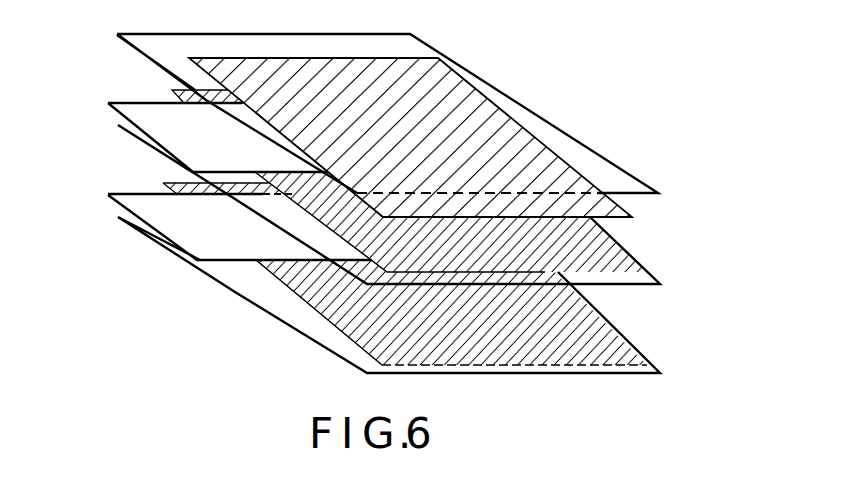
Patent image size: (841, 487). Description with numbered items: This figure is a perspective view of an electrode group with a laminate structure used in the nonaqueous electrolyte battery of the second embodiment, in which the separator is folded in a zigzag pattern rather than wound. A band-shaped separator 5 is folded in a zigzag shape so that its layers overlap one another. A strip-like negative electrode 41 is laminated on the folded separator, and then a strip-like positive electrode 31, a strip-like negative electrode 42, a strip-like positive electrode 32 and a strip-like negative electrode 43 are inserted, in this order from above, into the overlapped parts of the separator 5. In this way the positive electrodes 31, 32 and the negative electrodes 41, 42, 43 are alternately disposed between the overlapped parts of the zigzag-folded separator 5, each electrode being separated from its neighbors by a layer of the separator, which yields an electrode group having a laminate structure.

The separator 5 is at (610, 172).
The negative electrode 41 is at (625, 213).
The negative electrode 42 is at (606, 255).
The negative electrode 43 is at (612, 341).
The positive electrode 31 is at (135, 109).
The positive electrode 32 is at (173, 230).